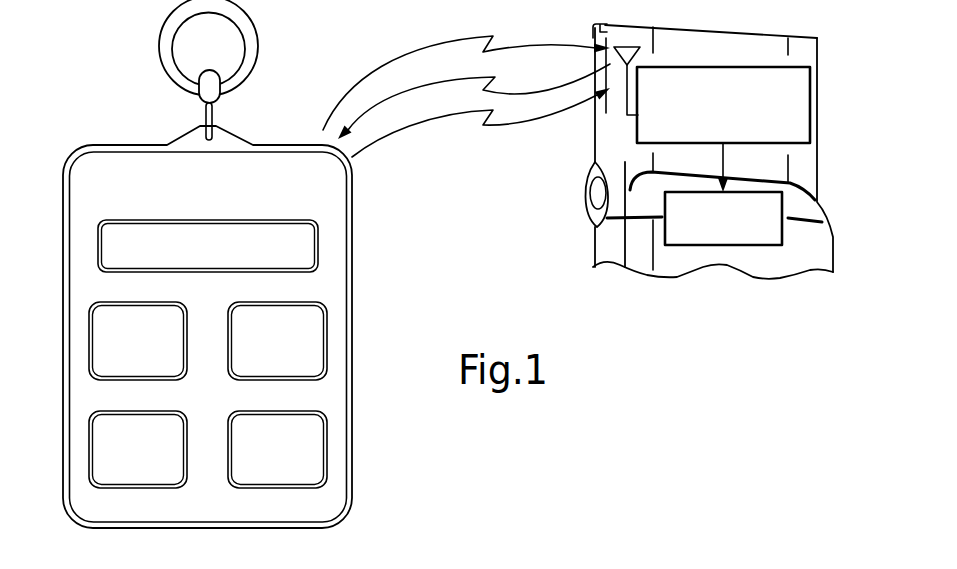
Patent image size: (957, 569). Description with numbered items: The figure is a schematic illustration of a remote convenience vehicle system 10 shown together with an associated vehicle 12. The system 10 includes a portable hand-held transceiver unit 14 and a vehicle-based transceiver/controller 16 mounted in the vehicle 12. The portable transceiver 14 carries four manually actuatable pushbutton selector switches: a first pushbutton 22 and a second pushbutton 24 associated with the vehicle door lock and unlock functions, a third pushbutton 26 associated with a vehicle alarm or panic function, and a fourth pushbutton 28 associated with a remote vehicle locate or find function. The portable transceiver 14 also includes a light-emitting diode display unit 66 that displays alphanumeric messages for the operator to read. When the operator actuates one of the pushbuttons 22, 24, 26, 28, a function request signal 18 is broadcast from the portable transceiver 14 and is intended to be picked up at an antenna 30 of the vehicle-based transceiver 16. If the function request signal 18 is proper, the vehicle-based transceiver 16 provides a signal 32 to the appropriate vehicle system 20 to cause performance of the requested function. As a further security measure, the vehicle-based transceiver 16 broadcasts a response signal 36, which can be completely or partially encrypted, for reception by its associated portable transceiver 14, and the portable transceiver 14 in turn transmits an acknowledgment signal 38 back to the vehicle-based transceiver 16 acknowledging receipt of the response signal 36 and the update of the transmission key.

The remote convenience vehicle system 10 is at (367, 25).
The vehicle 12 is at (812, 160).
The portable hand-held transceiver unit 14 is at (82, 170).
The vehicle-based transceiver/controller 16 is at (723, 71).
The function request signal 18 is at (452, 36).
The vehicle system 20 is at (781, 237).
The first pushbutton 22 is at (99, 355).
The second pushbutton 24 is at (316, 356).
The third pushbutton 26 is at (99, 466).
The fourth pushbutton 28 is at (315, 466).
The antenna 30 is at (629, 46).
The signal 32 is at (725, 157).
The response signal 36 is at (452, 78).
The acknowledgment signal 38 is at (449, 118).
The light-emitting diode display unit 66 is at (302, 243).